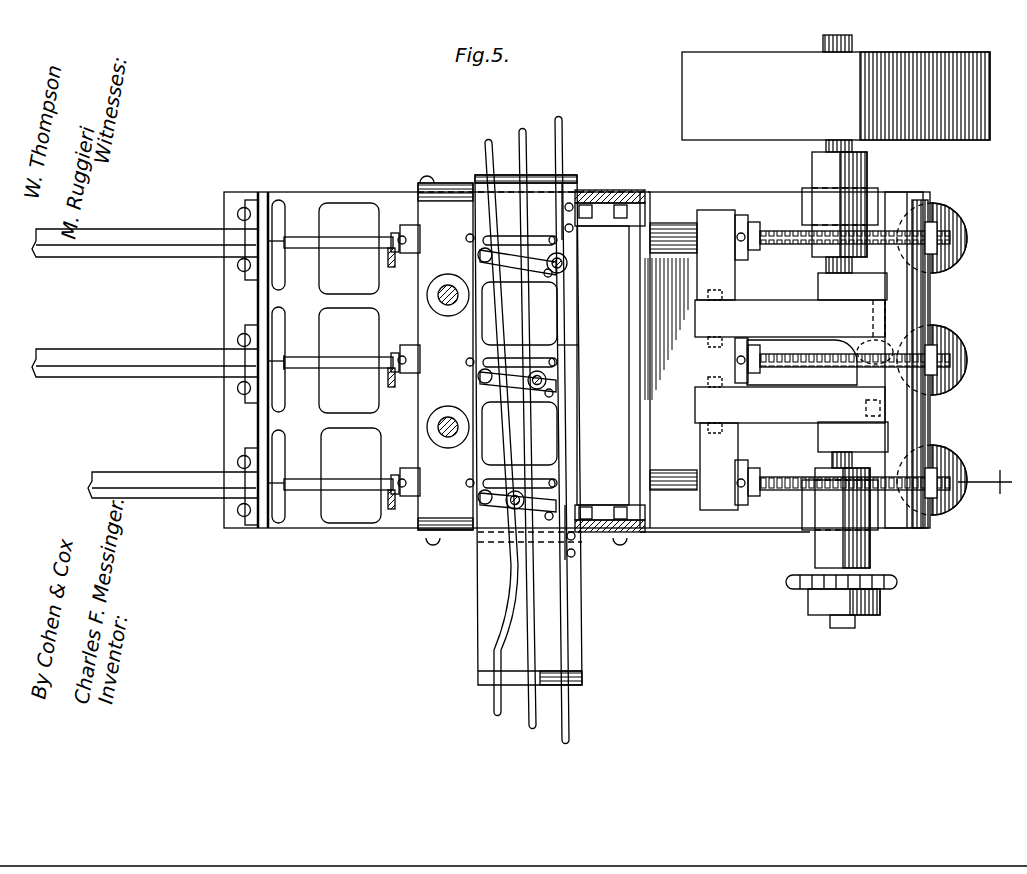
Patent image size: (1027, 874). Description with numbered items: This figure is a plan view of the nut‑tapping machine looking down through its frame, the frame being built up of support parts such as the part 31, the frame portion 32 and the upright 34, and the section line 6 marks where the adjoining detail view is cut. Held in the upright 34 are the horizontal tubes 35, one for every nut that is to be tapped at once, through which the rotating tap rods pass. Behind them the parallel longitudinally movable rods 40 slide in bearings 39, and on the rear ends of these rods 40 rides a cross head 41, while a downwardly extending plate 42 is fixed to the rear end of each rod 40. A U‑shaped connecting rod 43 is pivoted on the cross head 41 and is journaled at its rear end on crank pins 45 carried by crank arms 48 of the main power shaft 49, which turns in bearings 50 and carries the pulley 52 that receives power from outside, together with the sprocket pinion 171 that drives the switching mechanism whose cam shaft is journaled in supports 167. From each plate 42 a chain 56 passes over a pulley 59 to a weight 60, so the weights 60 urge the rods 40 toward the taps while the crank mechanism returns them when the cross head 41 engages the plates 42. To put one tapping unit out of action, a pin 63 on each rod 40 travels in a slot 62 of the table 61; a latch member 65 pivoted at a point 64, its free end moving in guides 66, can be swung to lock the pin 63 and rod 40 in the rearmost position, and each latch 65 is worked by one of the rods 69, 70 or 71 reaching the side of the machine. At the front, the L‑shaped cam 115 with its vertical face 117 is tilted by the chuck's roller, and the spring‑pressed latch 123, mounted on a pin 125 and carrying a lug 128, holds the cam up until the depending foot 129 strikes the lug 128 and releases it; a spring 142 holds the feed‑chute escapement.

The section line 6 is at (987, 482).
The support part 31 is at (718, 206).
The frame portion 32 is at (300, 530).
The upright 34 is at (266, 528).
The horizontal tube 35 is at (136, 230).
The bearing 39 is at (440, 196).
The longitudinally movable rod 40 is at (420, 238).
The cross head 41 is at (728, 270).
The downwardly extending plate 42 is at (744, 216).
The connecting rod 43 is at (750, 318).
The crank pin 45 is at (892, 360).
The crank arm 48 is at (850, 286).
The main power shaft 49 is at (843, 36).
The bearing 50 is at (862, 178).
The pulley 52 is at (912, 58).
The chain 56 is at (776, 232).
The pulley 59 is at (948, 232).
The weight 60 is at (960, 248).
The table 61 is at (580, 596).
The slot 62 is at (506, 236).
The pin 63 is at (560, 243).
The pivot point 64 is at (480, 378).
The latch member 65 is at (533, 250).
The guides 66 is at (575, 340).
The rod 69 is at (494, 172).
The rod 70 is at (528, 172).
The rod 71 is at (562, 172).
The cam 115 is at (355, 248).
The vertical face 117 is at (310, 368).
The latch 123 is at (385, 230).
The pin 125 is at (402, 236).
The pin 128 is at (393, 264).
The depending foot 129 is at (392, 258).
The spring 142 is at (468, 480).
The support 167 is at (598, 195).
The sprocket pinion 171 is at (882, 588).